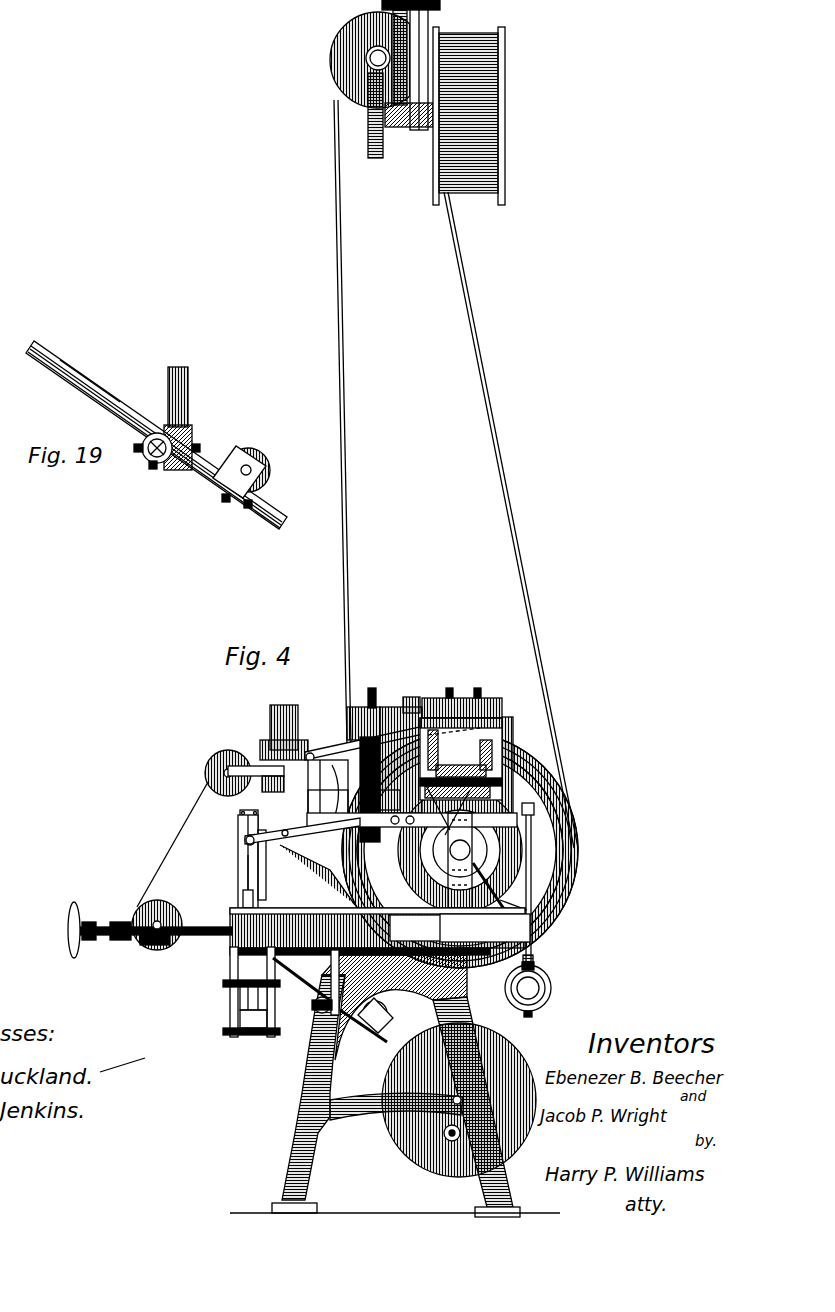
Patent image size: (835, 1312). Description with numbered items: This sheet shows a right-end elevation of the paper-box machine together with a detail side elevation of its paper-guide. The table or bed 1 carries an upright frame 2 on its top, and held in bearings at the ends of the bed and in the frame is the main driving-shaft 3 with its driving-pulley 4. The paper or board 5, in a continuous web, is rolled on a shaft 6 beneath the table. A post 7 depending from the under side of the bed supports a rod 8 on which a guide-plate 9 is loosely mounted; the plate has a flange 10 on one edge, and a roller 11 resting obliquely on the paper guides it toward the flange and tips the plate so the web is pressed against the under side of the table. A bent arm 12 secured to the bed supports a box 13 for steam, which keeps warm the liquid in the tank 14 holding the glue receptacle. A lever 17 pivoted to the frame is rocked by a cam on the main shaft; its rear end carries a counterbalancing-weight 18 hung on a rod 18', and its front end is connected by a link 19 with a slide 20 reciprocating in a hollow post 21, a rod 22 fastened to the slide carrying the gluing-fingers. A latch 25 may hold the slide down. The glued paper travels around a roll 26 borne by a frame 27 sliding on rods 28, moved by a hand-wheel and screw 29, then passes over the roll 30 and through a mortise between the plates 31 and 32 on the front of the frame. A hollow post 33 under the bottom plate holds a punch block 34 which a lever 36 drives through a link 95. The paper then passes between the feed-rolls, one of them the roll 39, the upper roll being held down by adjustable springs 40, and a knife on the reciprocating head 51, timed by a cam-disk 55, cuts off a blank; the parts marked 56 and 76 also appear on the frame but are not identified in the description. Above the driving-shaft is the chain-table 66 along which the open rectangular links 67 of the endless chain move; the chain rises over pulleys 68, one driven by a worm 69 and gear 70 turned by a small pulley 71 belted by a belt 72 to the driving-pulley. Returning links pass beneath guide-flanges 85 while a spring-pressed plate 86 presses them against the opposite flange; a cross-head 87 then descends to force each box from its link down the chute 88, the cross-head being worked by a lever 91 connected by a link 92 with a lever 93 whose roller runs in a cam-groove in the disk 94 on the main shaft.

In FIG. 4, the table or bed 1 is at (377, 931).
In FIG. 4, the upright frame 2 is at (512, 724).
In FIG. 4, the main driving-shaft 3 is at (472, 850).
In FIG. 4, the driving-pulley 4 is at (535, 914).
In FIG. 4, the paper or board 5 is at (258, 966).
In FIG. 4, the shaft 6 is at (420, 1162).
In FIG. 19, the post 7 is at (188, 394).
In FIG. 4, the post 7 is at (322, 990).
In FIG. 19, the rod 8 is at (157, 463).
In FIG. 4, the rod 8 is at (320, 1013).
In FIG. 19, the guide-plate 9 is at (82, 382).
In FIG. 4, the guide-plate 9 is at (328, 1006).
In FIG. 19, the flange 10 is at (95, 404).
In FIG. 4, the flange 10 is at (382, 1042).
In FIG. 19, the roller 11 is at (262, 462).
In FIG. 4, the roller 11 is at (388, 1010).
In FIG. 4, the bent arm 12 is at (250, 1036).
In FIG. 4, the box 13 is at (238, 1022).
In FIG. 4, the tank 14 is at (228, 1006).
In FIG. 4, the lever 17 is at (240, 828).
In FIG. 4, the counterbalancing-weight 18 is at (548, 991).
In FIG. 4, the rod 18' is at (554, 883).
In FIG. 4, the link 19 is at (244, 843).
In FIG. 4, the slide 20 is at (240, 860).
In FIG. 4, the hollow post 21 is at (240, 879).
In FIG. 4, the rod 22 is at (236, 962).
In FIG. 4, the latch 25 is at (242, 899).
In FIG. 4, the roll 26 is at (150, 950).
In FIG. 4, the frame 27 is at (120, 942).
In FIG. 4, the rods 28 is at (172, 947).
In FIG. 4, the hand-wheel and screw 29 is at (59, 930).
In FIG. 4, the roll 30 is at (207, 767).
In FIG. 4, the plate 31 is at (272, 740).
In FIG. 4, the bottom plate 32 is at (262, 746).
In FIG. 4, the hollow post 33 is at (267, 792).
In FIG. 4, the block 34 is at (240, 812).
In FIG. 4, the lever 36 is at (300, 857).
In FIG. 4, the feed-roll 39 is at (328, 809).
In FIG. 4, the adjustable springs 40 is at (378, 706).
In FIG. 4, the rectangular head 51 is at (412, 697).
In FIG. 4, the cam-disk 55 is at (395, 781).
In FIG. 4, the head block 56 is at (488, 698).
In FIG. 4, the chain-table 66 is at (545, 780).
In FIG. 4, the links 67 is at (492, 790).
In FIG. 4, the pulleys 68 is at (485, 116).
In FIG. 4, the worm 69 is at (368, 62).
In FIG. 4, the gear 70 is at (376, 131).
In FIG. 4, the small pulley 71 is at (369, 60).
In FIG. 4, the belt 72 is at (456, 474).
In FIG. 4, the bracket 76 is at (485, 931).
In FIG. 4, the guide-flanges 85 is at (500, 762).
In FIG. 4, the spring-pressed plate 86 is at (550, 798).
In FIG. 4, the cross-head 87 is at (460, 752).
In FIG. 4, the chute 88 is at (535, 892).
In FIG. 4, the lever 91 is at (369, 742).
In FIG. 4, the link 92 is at (328, 794).
In FIG. 4, the lever 93 is at (302, 836).
In FIG. 4, the disk 94 is at (417, 930).
In FIG. 4, the link 95 is at (310, 875).